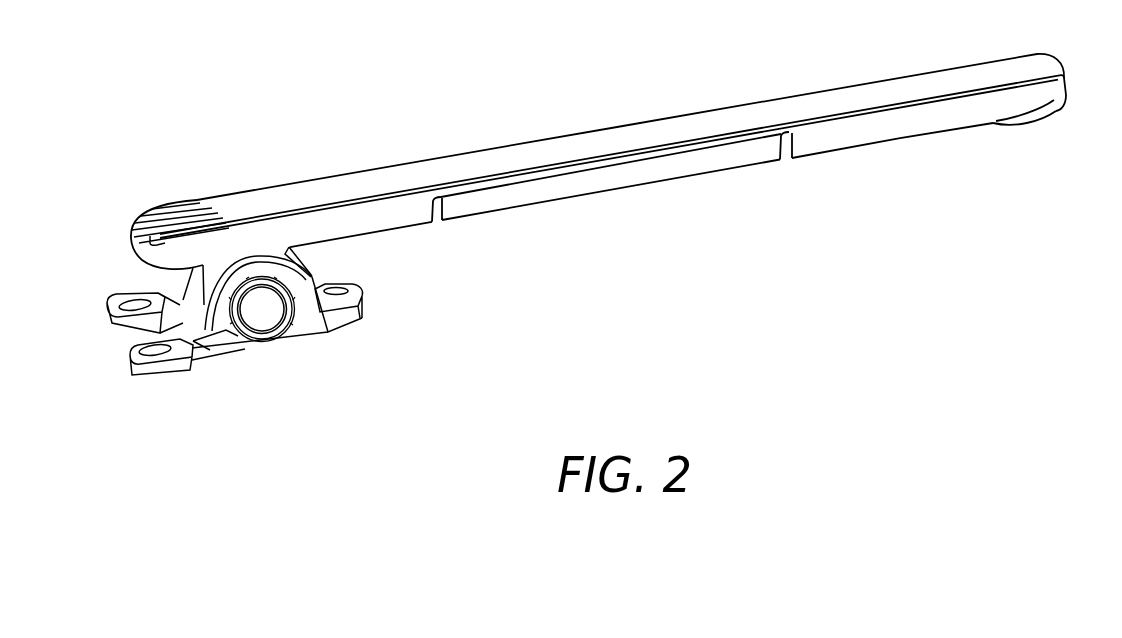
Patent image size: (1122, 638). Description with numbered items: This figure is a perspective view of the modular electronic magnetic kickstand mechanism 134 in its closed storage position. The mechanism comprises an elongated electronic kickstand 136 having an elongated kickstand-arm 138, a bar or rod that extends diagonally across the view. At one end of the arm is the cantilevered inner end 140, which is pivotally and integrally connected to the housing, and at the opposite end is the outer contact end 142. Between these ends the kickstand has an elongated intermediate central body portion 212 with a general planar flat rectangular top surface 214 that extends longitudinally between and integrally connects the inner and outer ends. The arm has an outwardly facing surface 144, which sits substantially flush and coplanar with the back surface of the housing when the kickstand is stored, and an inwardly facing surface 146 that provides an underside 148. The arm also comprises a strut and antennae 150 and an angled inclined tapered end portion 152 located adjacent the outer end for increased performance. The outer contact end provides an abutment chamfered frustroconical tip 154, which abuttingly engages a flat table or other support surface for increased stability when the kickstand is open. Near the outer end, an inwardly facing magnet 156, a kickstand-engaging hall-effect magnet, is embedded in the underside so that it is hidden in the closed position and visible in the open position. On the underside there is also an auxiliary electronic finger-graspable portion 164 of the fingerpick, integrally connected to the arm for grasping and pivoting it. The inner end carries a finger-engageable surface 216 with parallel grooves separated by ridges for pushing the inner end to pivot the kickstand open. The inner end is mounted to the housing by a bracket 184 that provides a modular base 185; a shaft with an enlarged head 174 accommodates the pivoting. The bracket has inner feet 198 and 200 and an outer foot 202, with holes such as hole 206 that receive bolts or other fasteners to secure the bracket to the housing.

The modular electronic magnetic kickstand mechanism 134 is at (377, 118).
The elongated electronic kickstand 136 is at (447, 196).
The elongated kickstand-arm 138 is at (828, 100).
The cantilevered inner end 140 is at (143, 245).
The outer contact end 142 is at (1060, 72).
The outwardly facing surface 144 is at (732, 102).
The inwardly facing surface 146 is at (847, 152).
The underside 148 is at (953, 120).
The strut and antennae 150 is at (787, 160).
The angled inclined tapered end portion 152 is at (980, 72).
The abutment chamfered frustroconical tip 154 is at (1062, 92).
The inwardly facing magnet 156 is at (1045, 117).
The auxiliary electronic finger-graspable portion 164 is at (657, 170).
The enlarged head 174 is at (263, 328).
The bracket 184 is at (205, 363).
The modular base 185 is at (315, 328).
The inner foot 198 is at (152, 368).
The inner foot 200 is at (118, 323).
The outer foot 202 is at (357, 310).
The hole 206 is at (340, 287).
The elongated intermediate central body portion 212 is at (615, 125).
The general planar flat rectangular top surface 214 is at (513, 157).
The finger-engageable surface 216 is at (177, 212).